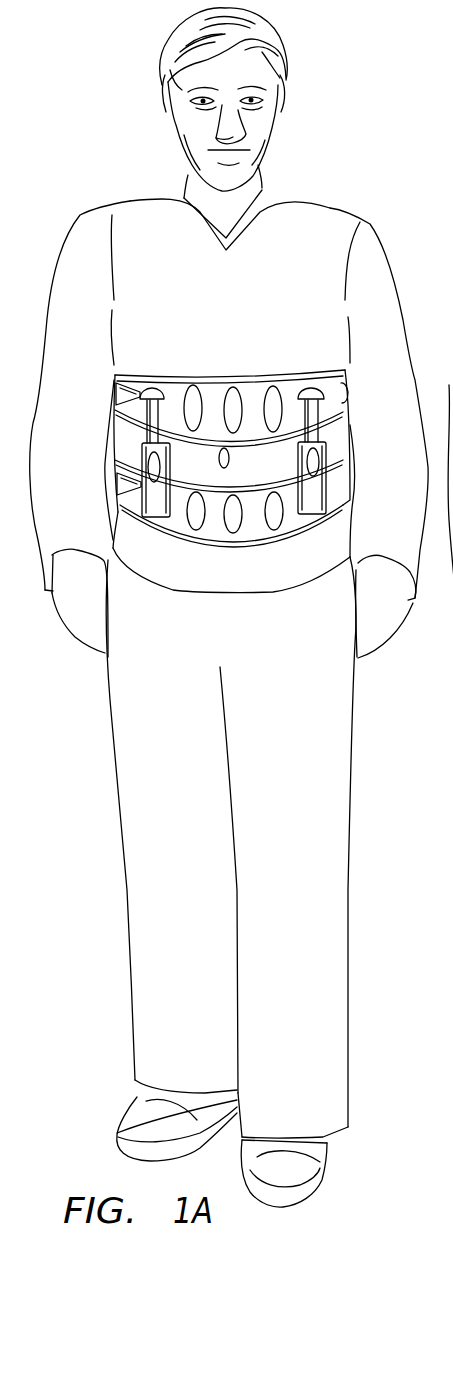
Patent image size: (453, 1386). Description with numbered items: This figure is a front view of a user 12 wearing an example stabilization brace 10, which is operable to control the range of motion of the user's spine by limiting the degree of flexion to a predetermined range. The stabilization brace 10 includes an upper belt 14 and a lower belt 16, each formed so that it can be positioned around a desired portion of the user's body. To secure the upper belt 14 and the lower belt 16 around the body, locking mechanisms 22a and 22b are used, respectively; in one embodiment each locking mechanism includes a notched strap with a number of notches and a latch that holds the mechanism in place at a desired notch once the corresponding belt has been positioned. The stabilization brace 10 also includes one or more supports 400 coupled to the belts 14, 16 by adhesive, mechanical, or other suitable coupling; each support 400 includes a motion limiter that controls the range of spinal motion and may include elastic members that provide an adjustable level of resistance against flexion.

The stabilization brace 10 is at (267, 347).
The user 12 is at (114, 154).
The upper belt 14 is at (182, 376).
The lower belt 16 is at (179, 535).
The locking mechanism 22a is at (130, 395).
The locking mechanism 22b is at (128, 481).
The support 400 is at (172, 470).